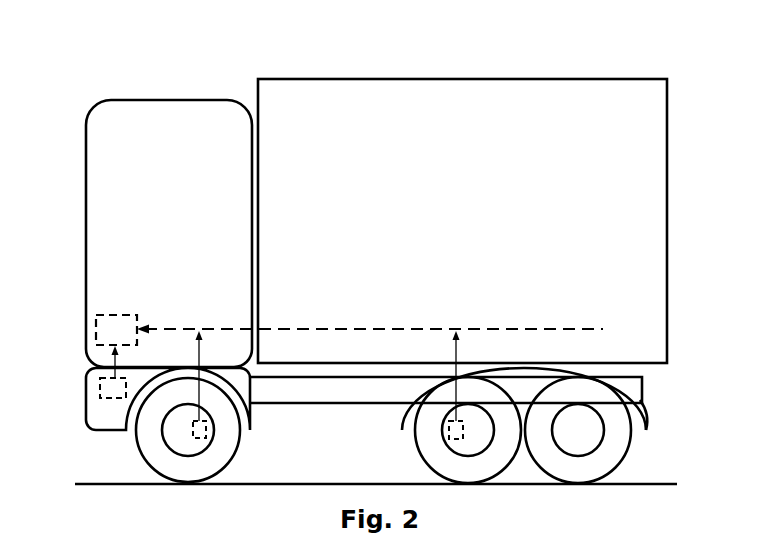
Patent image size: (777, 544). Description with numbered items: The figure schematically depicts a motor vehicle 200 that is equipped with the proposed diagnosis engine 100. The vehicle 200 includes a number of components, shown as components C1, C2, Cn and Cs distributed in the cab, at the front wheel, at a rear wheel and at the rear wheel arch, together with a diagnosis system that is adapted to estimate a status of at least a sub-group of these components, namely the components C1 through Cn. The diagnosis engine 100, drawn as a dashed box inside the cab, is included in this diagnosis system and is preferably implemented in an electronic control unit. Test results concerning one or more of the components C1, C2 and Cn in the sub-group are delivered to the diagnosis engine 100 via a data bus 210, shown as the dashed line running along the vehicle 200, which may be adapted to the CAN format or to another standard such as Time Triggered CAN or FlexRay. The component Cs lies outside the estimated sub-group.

The motor vehicle 200 is at (168, 68).
The diagnosis engine 100 is at (119, 313).
The data bus 210 is at (523, 328).
The component C1 is at (102, 388).
The component C2 is at (207, 431).
The component Cn is at (445, 435).
The component Cs is at (646, 418).